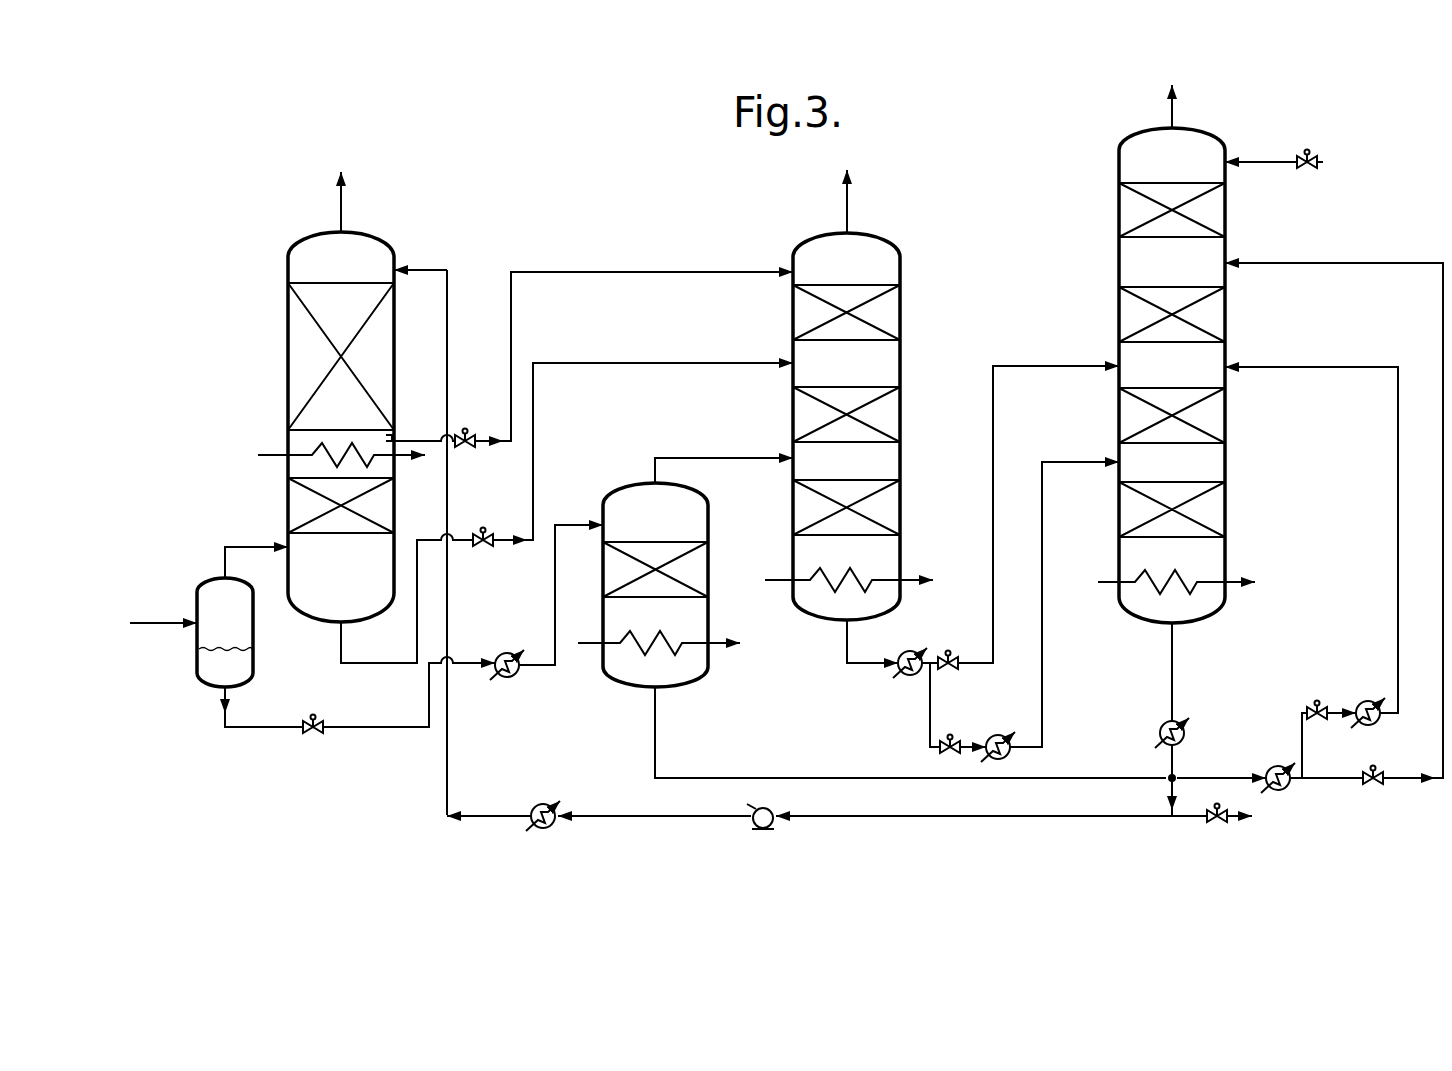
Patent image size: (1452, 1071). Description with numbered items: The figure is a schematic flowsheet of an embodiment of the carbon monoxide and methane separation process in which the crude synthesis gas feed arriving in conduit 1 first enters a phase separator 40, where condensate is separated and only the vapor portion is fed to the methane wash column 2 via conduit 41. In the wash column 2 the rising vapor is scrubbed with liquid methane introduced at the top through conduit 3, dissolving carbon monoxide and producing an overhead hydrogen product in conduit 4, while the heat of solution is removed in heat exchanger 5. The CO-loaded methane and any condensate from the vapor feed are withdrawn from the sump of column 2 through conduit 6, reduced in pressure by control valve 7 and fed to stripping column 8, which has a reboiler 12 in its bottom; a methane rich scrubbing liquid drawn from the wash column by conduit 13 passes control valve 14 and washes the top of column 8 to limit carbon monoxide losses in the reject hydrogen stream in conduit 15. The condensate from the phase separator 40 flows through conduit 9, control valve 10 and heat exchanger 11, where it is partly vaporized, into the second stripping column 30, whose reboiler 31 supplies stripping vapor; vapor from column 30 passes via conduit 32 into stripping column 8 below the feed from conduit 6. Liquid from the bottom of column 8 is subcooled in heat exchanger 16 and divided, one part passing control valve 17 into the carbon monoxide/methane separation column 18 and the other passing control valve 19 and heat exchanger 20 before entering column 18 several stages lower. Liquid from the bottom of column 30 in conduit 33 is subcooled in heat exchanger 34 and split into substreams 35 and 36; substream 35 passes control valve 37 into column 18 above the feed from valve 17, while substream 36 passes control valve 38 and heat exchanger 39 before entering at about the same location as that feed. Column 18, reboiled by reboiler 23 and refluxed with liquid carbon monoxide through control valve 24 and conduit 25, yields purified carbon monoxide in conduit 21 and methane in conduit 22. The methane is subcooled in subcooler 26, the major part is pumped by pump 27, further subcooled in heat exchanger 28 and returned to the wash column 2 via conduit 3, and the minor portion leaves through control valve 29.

The conduit 1 is at (158, 623).
The methane wash column 2 is at (288, 378).
The conduit 3 is at (437, 268).
The conduit 4 is at (348, 200).
The heat exchanger 5 is at (276, 455).
The conduit 6 is at (386, 663).
The control valve 7 is at (486, 529).
The stripping column 8 is at (900, 338).
The conduit 9 is at (263, 727).
The control valve 10 is at (313, 714).
The heat exchanger 11 is at (510, 652).
The reboiler 12 is at (768, 580).
The conduit 13 is at (432, 440).
The control valve 14 is at (466, 430).
The conduit 15 is at (855, 206).
The heat exchanger 16 is at (912, 651).
The control valve 17 is at (948, 650).
The carbon monoxide/methane separation column 18 is at (1225, 312).
The control valve 19 is at (952, 734).
The heat exchanger 20 is at (1002, 735).
The conduit 21 is at (1175, 112).
The conduit 22 is at (1175, 666).
The reboiler 23 is at (1155, 583).
The control valve 24 is at (1308, 150).
The conduit 25 is at (1262, 160).
The subcooler 26 is at (1160, 728).
The pump 27 is at (770, 809).
The heat exchanger 28 is at (547, 802).
The control valve 29 is at (1217, 826).
The second stripping column 30 is at (708, 520).
The reboiler 31 is at (590, 643).
The conduit 32 is at (690, 458).
The conduit 33 is at (708, 776).
The heat exchanger 34 is at (1270, 771).
The substream 35 is at (1335, 776).
The substream 36 is at (1301, 741).
The control valve 37 is at (1375, 766).
The control valve 38 is at (1318, 701).
The heat exchanger 39 is at (1368, 701).
The phase separator 40 is at (253, 628).
The conduit 41 is at (244, 547).